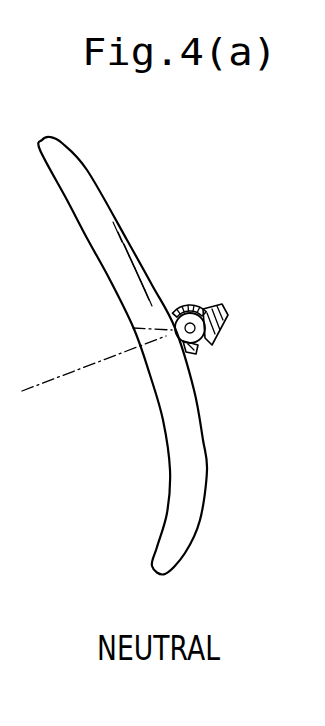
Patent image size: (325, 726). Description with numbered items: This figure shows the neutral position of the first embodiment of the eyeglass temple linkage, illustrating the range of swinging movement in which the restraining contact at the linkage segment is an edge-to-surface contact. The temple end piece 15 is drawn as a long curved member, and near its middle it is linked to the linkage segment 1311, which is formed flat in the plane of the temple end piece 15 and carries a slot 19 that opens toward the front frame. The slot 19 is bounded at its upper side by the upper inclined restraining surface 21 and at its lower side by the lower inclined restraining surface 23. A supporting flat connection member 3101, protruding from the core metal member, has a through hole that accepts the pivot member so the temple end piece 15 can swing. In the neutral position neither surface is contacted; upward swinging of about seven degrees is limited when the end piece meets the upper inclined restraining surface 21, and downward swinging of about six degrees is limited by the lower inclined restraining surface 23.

The temple end piece 15 is at (87, 170).
The upper inclined restraining surface 21 is at (168, 313).
The linkage segment 1311 is at (201, 301).
The connection member 3101 is at (207, 346).
The slot 19 is at (125, 328).
The lower inclined restraining surface 23 is at (185, 367).